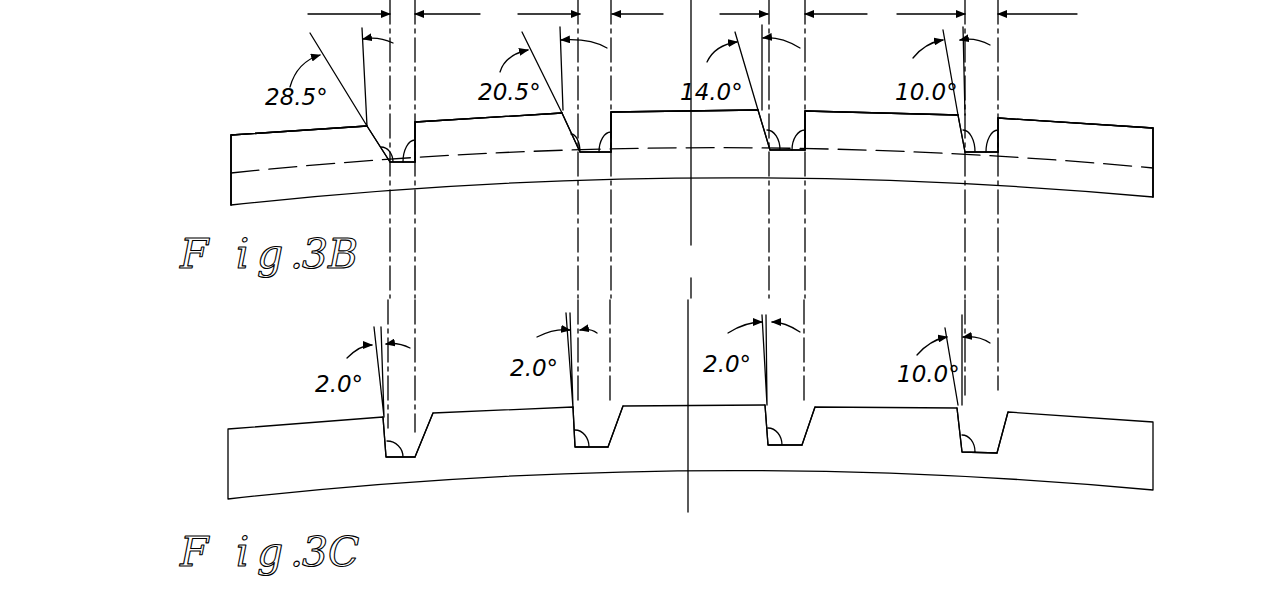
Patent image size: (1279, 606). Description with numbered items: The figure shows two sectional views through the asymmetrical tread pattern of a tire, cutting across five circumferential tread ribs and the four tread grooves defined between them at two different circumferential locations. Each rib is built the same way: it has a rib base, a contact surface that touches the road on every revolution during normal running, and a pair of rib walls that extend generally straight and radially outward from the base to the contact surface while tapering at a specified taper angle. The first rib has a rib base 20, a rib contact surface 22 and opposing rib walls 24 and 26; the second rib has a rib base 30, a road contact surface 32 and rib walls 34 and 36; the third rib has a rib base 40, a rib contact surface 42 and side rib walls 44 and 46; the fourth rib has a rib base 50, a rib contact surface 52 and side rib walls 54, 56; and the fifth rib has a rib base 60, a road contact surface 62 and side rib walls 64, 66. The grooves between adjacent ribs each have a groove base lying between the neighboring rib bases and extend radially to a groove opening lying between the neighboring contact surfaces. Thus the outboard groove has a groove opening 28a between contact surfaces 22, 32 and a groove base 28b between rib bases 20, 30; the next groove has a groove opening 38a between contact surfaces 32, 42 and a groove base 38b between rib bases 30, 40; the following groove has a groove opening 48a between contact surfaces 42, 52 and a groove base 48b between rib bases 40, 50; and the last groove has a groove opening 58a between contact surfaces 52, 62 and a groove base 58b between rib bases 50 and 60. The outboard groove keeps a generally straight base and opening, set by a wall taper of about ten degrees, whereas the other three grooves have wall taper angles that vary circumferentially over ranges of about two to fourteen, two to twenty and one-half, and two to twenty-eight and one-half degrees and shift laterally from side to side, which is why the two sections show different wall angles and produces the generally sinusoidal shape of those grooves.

In FIG. 3B, the rib base 20 is at (1023, 160).
In FIG. 3B, the rib contact surface 22 is at (1077, 118).
In FIG. 3B, the rib wall 24 is at (1153, 152).
In FIG. 3B, the rib wall 26 is at (990, 157).
In FIG. 3B, the groove opening 28a is at (977, 133).
In FIG. 3C, the groove opening 28a is at (977, 423).
In FIG. 3B, the groove base 28b is at (983, 150).
In FIG. 3B, the rib base 30 is at (853, 152).
In FIG. 3B, the road contact surface 32 is at (833, 110).
In FIG. 3B, the rib wall 34 is at (963, 155).
In FIG. 3C, the rib wall 34 is at (970, 452).
In FIG. 3B, the rib wall 36 is at (795, 152).
In FIG. 3B, the groove opening 38a is at (790, 122).
In FIG. 3C, the groove opening 38a is at (785, 423).
In FIG. 3B, the groove base 38b is at (782, 118).
In FIG. 3B, the rib base 40 is at (630, 152).
In FIG. 3B, the rib contact surface 42 is at (645, 110).
In FIG. 3B, the side rib wall 44 is at (777, 150).
In FIG. 3C, the side rib wall 44 is at (782, 443).
In FIG. 3B, the side rib wall 46 is at (593, 150).
In FIG. 3B, the groove opening 48a is at (583, 117).
In FIG. 3C, the groove opening 48a is at (592, 425).
In FIG. 3B, the groove base 48b is at (596, 140).
In FIG. 3B, the rib base 50 is at (438, 160).
In FIG. 3B, the rib contact surface 52 is at (447, 120).
In FIG. 3B, the side rib wall 54 is at (580, 150).
In FIG. 3C, the side rib wall 54 is at (590, 447).
In FIG. 3B, the side rib wall 56 is at (403, 163).
In FIG. 3B, the groove opening 58a is at (400, 142).
In FIG. 3C, the groove opening 58a is at (402, 430).
In FIG. 3B, the groove base 58b is at (397, 133).
In FIG. 3B, the rib base 60 is at (283, 170).
In FIG. 3B, the road contact surface 62 is at (257, 135).
In FIG. 3B, the side rib wall 64 is at (393, 163).
In FIG. 3C, the side rib wall 64 is at (396, 443).
In FIG. 3B, the side rib wall 66 is at (230, 160).